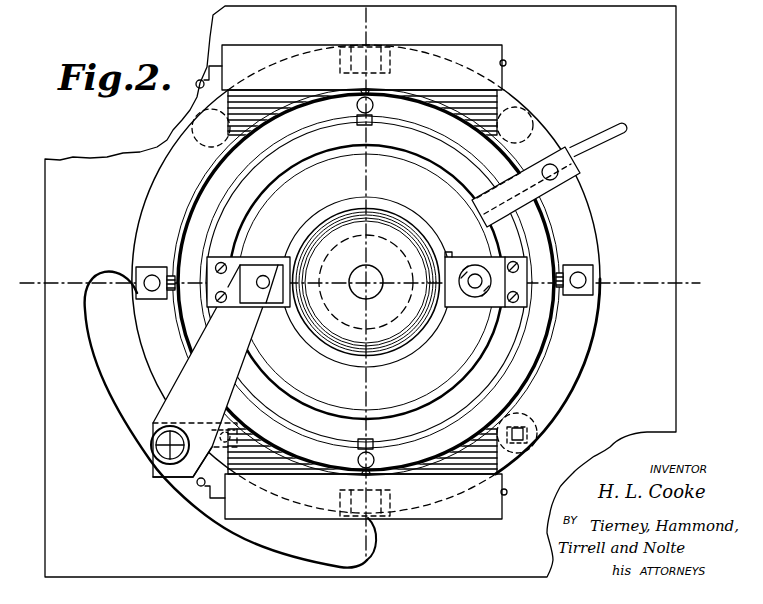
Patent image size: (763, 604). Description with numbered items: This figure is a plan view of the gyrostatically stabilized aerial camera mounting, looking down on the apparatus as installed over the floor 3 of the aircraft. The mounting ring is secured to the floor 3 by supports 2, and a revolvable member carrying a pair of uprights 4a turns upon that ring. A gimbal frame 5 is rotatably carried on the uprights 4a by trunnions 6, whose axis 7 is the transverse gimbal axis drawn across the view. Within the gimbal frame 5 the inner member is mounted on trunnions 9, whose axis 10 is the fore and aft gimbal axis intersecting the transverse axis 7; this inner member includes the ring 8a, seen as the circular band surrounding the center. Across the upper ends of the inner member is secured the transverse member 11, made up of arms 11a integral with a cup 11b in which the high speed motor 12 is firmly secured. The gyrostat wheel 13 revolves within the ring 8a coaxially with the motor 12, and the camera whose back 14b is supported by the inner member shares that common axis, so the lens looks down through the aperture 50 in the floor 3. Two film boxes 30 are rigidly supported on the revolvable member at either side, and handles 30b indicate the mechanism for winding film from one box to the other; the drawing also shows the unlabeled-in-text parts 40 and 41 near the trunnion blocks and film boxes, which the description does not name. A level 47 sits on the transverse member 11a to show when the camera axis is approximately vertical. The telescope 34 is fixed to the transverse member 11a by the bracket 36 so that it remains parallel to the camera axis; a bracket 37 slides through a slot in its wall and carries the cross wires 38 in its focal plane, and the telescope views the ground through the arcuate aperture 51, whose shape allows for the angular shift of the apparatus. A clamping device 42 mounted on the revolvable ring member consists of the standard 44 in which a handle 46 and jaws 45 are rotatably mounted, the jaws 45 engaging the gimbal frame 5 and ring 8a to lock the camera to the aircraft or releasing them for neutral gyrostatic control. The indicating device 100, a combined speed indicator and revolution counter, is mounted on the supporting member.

The supports 2 is at (505, 103).
The floor 3 is at (360, 291).
The uprights 4a is at (136, 296).
The gimbal frame 5 is at (125, 229).
The trunnions 6 is at (173, 276).
The transverse gimbal axis 7 is at (361, 284).
The ring 8a is at (248, 192).
The trunnions 9 is at (365, 113).
The fore and aft gimbal axis 10 is at (366, 549).
The transverse member 11 is at (448, 257).
The arms 11a is at (240, 262).
The cup 11b is at (393, 213).
The high speed motor 12 is at (364, 241).
The gyrostat wheel 13 is at (366, 301).
The camera back 14b is at (240, 445).
The film boxes 30 is at (482, 47).
The handles 30b is at (222, 502).
The telescope 34 is at (148, 453).
The bracket 36 is at (215, 371).
The bracket 37 is at (180, 473).
The cross wires 38 is at (171, 460).
The stud block 40 is at (150, 280).
The slot 41 is at (373, 103).
The clamping device 42 is at (541, 156).
The standard 44 is at (572, 192).
The jaws 45 is at (560, 204).
The handle 46 is at (624, 124).
The level 47 is at (471, 266).
The aperture 50 is at (372, 289).
The aperture 51 is at (113, 397).
The indicating device 100 is at (524, 436).